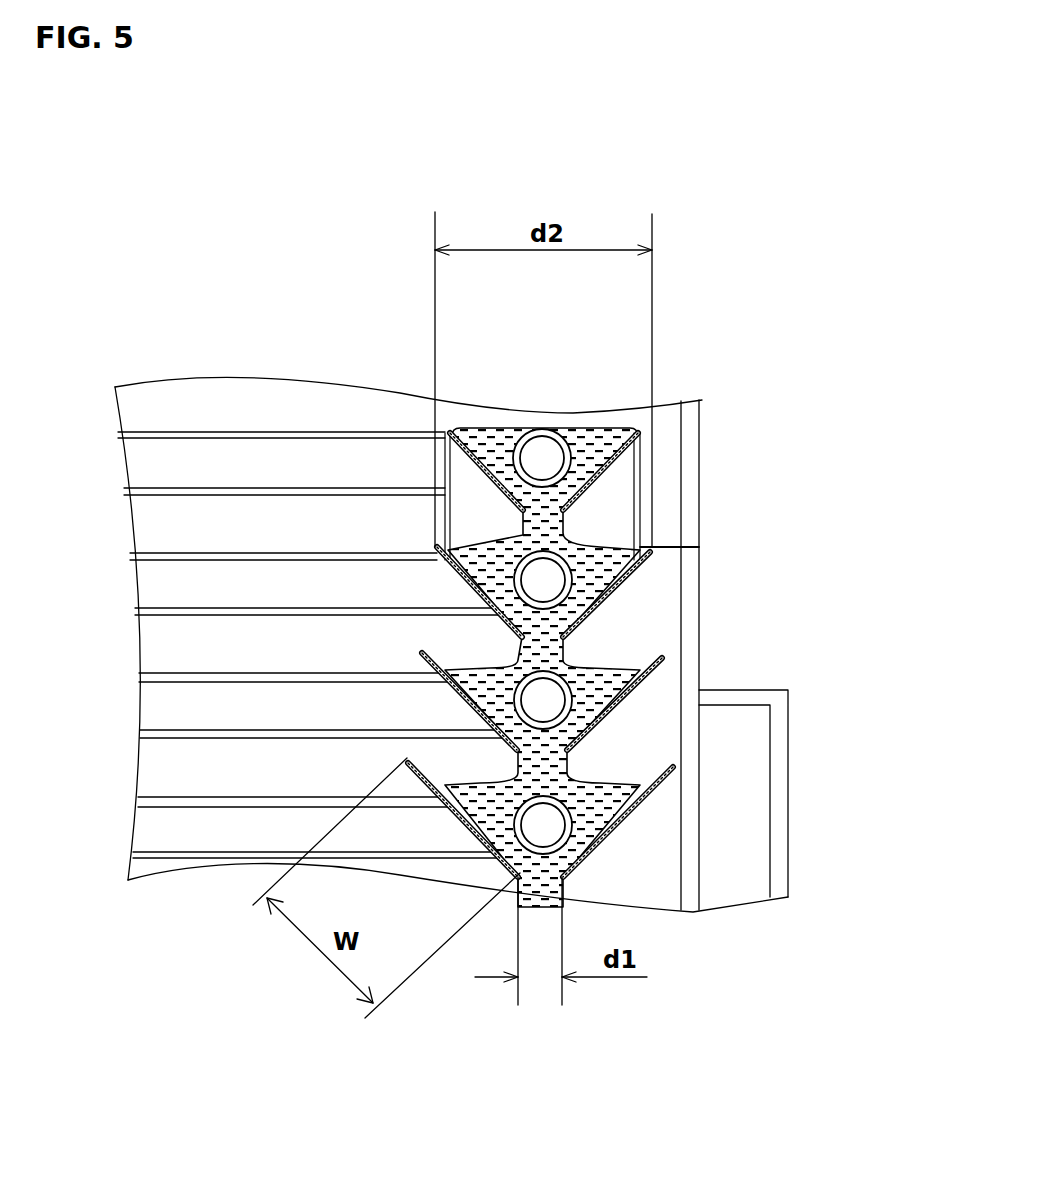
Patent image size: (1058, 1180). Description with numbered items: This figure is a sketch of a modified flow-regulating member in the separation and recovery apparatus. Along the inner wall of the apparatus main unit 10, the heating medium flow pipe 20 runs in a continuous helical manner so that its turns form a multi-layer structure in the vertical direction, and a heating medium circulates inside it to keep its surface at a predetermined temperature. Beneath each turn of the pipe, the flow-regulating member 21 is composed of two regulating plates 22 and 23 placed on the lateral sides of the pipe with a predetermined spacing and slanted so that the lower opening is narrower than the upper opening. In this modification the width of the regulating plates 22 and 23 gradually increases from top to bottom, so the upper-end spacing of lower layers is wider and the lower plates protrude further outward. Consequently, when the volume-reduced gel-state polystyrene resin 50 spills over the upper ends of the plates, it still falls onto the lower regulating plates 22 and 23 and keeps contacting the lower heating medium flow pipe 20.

The apparatus main unit 10 is at (690, 603).
The heating medium flow pipe 20 is at (177, 437).
The flow-regulating member 21 is at (873, 763).
The regulating plate 22 is at (513, 845).
The regulating plate 23 is at (603, 840).
The volume-reduced gel-state polystyrene resin 50 is at (700, 547).